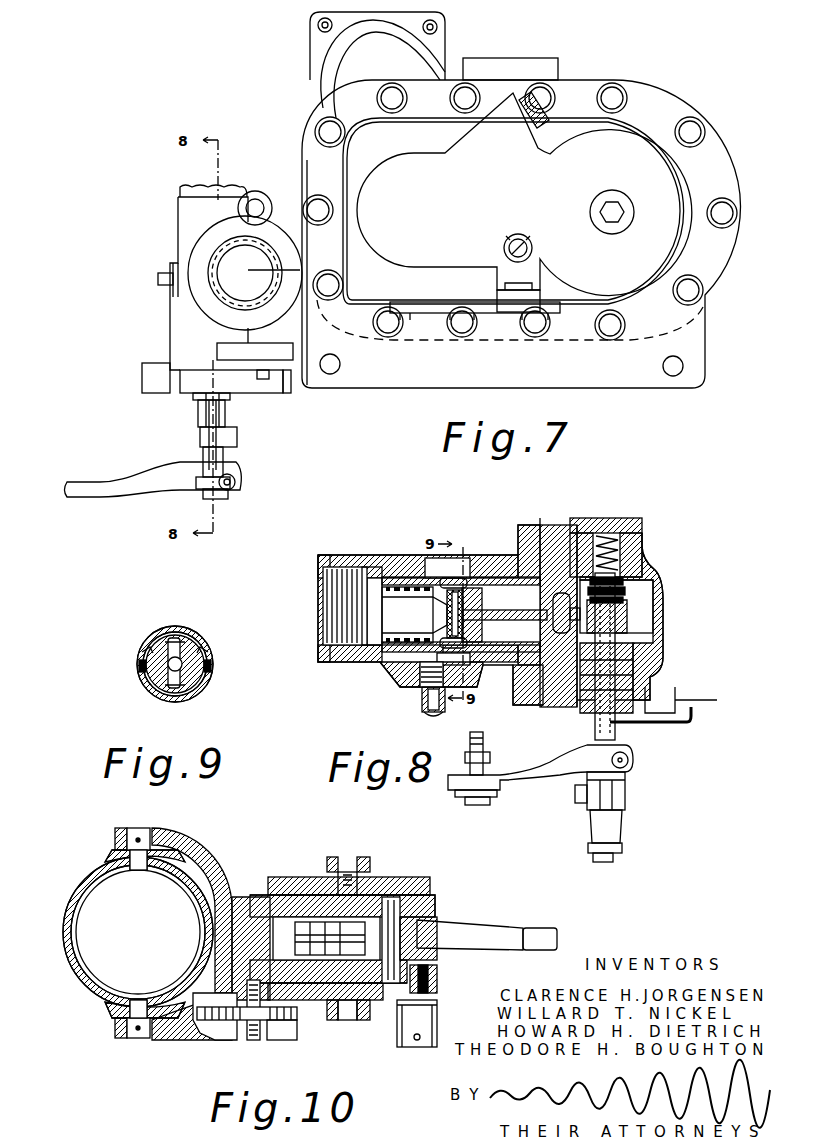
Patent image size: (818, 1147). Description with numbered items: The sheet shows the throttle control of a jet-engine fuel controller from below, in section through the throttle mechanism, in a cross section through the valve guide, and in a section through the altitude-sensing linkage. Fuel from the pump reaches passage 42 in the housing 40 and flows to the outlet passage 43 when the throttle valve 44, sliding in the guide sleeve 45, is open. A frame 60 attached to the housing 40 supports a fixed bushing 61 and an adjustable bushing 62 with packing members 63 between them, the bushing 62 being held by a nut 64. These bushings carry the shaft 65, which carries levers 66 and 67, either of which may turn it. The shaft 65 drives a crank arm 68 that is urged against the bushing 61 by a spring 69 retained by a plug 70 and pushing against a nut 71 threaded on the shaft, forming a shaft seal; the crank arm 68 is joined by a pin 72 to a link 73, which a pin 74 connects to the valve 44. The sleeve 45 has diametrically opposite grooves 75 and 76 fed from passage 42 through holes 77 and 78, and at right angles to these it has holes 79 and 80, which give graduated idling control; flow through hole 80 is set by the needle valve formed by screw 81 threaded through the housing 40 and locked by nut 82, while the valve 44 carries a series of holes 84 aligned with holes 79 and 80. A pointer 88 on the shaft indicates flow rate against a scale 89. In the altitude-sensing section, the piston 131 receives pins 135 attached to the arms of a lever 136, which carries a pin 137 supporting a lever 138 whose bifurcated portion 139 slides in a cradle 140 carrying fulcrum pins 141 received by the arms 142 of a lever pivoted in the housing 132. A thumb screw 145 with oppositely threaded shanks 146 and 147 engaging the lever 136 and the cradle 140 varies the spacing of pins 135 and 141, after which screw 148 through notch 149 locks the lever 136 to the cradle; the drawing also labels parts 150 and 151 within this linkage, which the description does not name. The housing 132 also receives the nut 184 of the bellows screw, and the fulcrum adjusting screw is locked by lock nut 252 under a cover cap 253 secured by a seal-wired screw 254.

In FIG. 8, the housing 40 is at (372, 555).
In FIG. 8, the passage 42 is at (447, 572).
In FIG. 7, the outlet passage 43 is at (223, 258).
In FIG. 8, the outlet passage 43 is at (327, 585).
In FIG. 8, the throttle valve 44 is at (497, 578).
In FIG. 8, the guide sleeve 45 is at (504, 615).
In FIG. 9, the guide sleeve 45 is at (165, 628).
In FIG. 8, the frame 60 is at (645, 558).
In FIG. 8, the fixed bushing 61 is at (639, 618).
In FIG. 8, the adjustable bushing 62 is at (635, 677).
In FIG. 8, the packing members 63 is at (630, 643).
In FIG. 8, the nut 64 is at (660, 697).
In FIG. 7, the shaft 65 is at (193, 393).
In FIG. 8, the shaft 65 is at (620, 630).
In FIG. 7, the lever 66 is at (100, 487).
In FIG. 8, the lever 66 is at (520, 783).
In FIG. 8, the lever 67 is at (623, 843).
In FIG. 8, the crank arm 68 is at (623, 600).
In FIG. 8, the spring 69 is at (610, 545).
In FIG. 7, the plug 70 is at (192, 188).
In FIG. 8, the plug 70 is at (642, 518).
In FIG. 8, the nut 71 is at (622, 592).
In FIG. 8, the pin 72 is at (560, 598).
In FIG. 8, the link 73 is at (517, 625).
In FIG. 8, the pin 74 is at (463, 585).
In FIG. 9, the pin 74 is at (180, 638).
In FIG. 9, the groove 75 is at (142, 655).
In FIG. 9, the groove 76 is at (210, 655).
In FIG. 9, the hole 77 is at (140, 668).
In FIG. 9, the hole 78 is at (210, 668).
In FIG. 8, the hole 79 is at (423, 605).
In FIG. 8, the hole 80 is at (420, 665).
In FIG. 7, the screw 81 is at (158, 278).
In FIG. 8, the screw 81 is at (420, 687).
In FIG. 7, the nut 82 is at (282, 372).
In FIG. 8, the nut 82 is at (428, 714).
In FIG. 8, the holes 84 is at (398, 635).
In FIG. 8, the pointer 88 is at (693, 720).
In FIG. 7, the scale 89 is at (143, 378).
In FIG. 10, the piston 131 is at (83, 878).
In FIG. 7, the housing 132 is at (693, 112).
In FIG. 10, the pins 135 is at (147, 833).
In FIG. 10, the lever 136 is at (217, 850).
In FIG. 10, the pin 137 is at (397, 897).
In FIG. 10, the lever 138 is at (480, 927).
In FIG. 10, the bifurcated portion 139 is at (437, 900).
In FIG. 10, the cradle 140 is at (293, 878).
In FIG. 10, the fulcrum pins 141 is at (350, 857).
In FIG. 10, the arms 142 is at (370, 862).
In FIG. 10, the thumb screw 145 is at (253, 1040).
In FIG. 10, the shank 146 is at (212, 1033).
In FIG. 10, the shank 147 is at (300, 1017).
In FIG. 10, the screw 148 is at (420, 1047).
In FIG. 10, the notch 149 is at (437, 993).
In FIG. 10, the piston 150 is at (317, 917).
In FIG. 10, the housing 151 is at (277, 910).
In FIG. 7, the nut 184 is at (622, 212).
In FIG. 7, the lock nut 252 is at (543, 283).
In FIG. 7, the cover cap 253 is at (493, 293).
In FIG. 7, the screw 254 is at (517, 333).